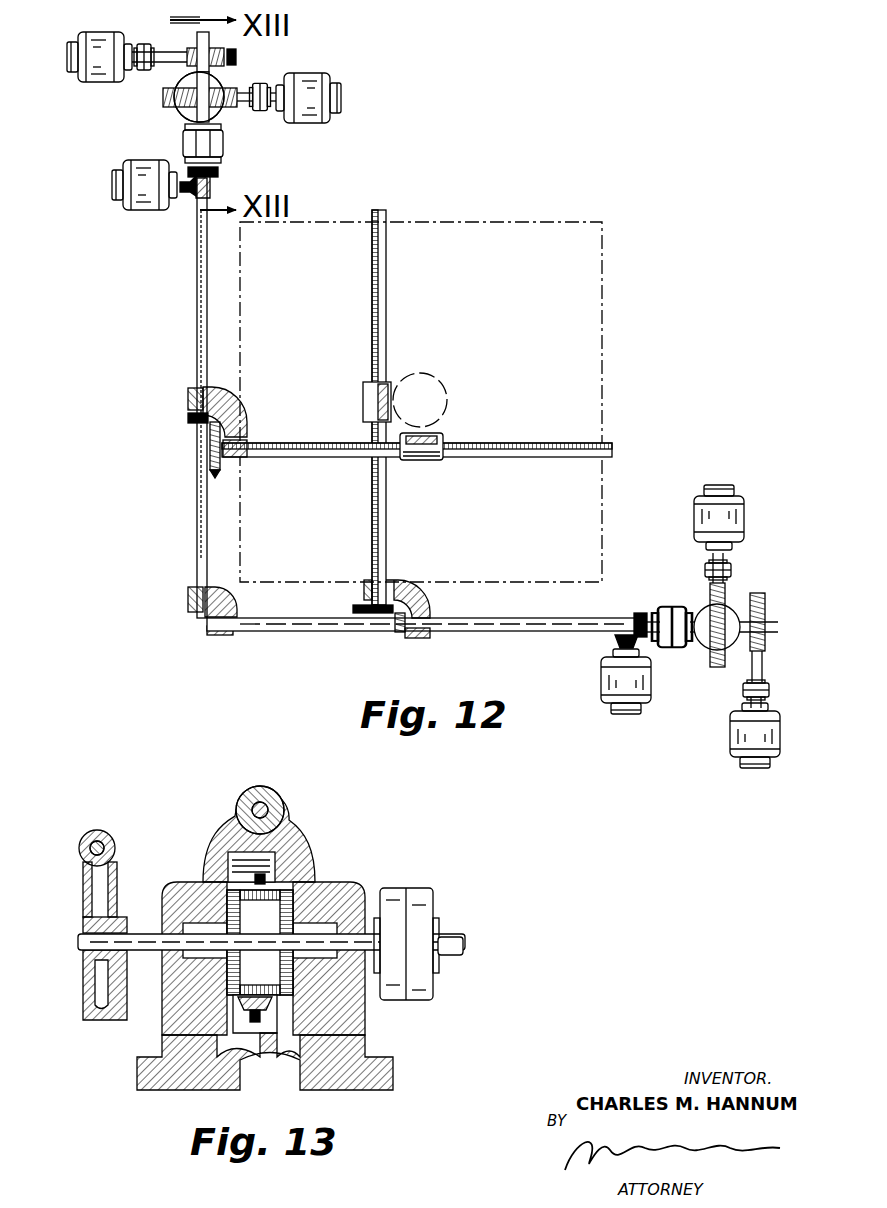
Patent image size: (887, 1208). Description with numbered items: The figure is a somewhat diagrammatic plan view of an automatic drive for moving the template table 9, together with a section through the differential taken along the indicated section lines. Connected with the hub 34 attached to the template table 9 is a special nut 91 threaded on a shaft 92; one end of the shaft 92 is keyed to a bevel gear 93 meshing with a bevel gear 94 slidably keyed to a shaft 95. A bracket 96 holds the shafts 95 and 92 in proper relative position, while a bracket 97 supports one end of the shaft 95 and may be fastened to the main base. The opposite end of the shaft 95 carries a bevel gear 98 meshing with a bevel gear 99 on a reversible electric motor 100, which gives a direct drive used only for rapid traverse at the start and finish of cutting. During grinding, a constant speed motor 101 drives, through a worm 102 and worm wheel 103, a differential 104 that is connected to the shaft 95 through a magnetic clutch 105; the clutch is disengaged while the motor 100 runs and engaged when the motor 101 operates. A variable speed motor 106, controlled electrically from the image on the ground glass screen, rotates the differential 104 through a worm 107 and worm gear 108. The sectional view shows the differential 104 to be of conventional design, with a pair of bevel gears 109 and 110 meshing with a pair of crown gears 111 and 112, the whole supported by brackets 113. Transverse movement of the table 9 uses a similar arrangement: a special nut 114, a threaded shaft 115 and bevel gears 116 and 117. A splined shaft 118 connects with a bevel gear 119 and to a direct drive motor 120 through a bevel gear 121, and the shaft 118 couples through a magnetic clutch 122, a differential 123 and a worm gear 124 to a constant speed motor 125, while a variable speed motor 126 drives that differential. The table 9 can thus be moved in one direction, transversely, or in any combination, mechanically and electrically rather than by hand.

In FIG. 12, the template table 9 is at (602, 315).
In FIG. 12, the hub 34 is at (444, 386).
In FIG. 12, the special nut 91 is at (424, 462).
In FIG. 12, the shaft 92 is at (574, 446).
In FIG. 12, the bevel gear 93 is at (212, 456).
In FIG. 12, the bevel gear 94 is at (188, 419).
In FIG. 12, the shaft 95 is at (197, 352).
In FIG. 12, the bracket 96 is at (195, 397).
In FIG. 12, the bracket 97 is at (188, 601).
In FIG. 12, the bevel gear 98 is at (218, 172).
In FIG. 12, the bevel gear 99 is at (185, 194).
In FIG. 12, the reversible electric motor 100 is at (140, 192).
In FIG. 12, the constant speed motor 101 is at (90, 80).
In FIG. 12, the worm 102 is at (198, 48).
In FIG. 12, the worm wheel 103 is at (236, 57).
In FIG. 12, the differential 104 is at (165, 90).
In FIG. 13, the differential 104 is at (292, 855).
In FIG. 12, the magnetic clutch 105 is at (185, 143).
In FIG. 13, the magnetic clutch 105 is at (416, 908).
In FIG. 12, the variable speed motor 106 is at (320, 100).
In FIG. 12, the worm 107 is at (212, 107).
In FIG. 12, the worm gear 108 is at (236, 104).
In FIG. 13, the bevel gear 109 is at (228, 890).
In FIG. 13, the bevel gear 110 is at (332, 882).
In FIG. 13, the crown gear 111 is at (300, 832).
In FIG. 13, the crown gear 112 is at (320, 1000).
In FIG. 13, the brackets 113 is at (150, 1075).
In FIG. 12, the special nut 114 is at (363, 394).
In FIG. 12, the threaded shaft 115 is at (372, 502).
In FIG. 12, the bevel gear 116 is at (362, 614).
In FIG. 12, the bevel gear 117 is at (398, 632).
In FIG. 12, the splined shaft 118 is at (500, 632).
In FIG. 12, the bevel gear 119 is at (638, 613).
In FIG. 12, the direct drive motor 120 is at (610, 705).
In FIG. 12, the bevel gear 121 is at (616, 641).
In FIG. 12, the magnetic clutch 122 is at (675, 650).
In FIG. 12, the differential 123 is at (712, 640).
In FIG. 12, the worm gear 124 is at (760, 652).
In FIG. 12, the constant speed motor 125 is at (752, 745).
In FIG. 12, the variable speed motor 126 is at (736, 505).